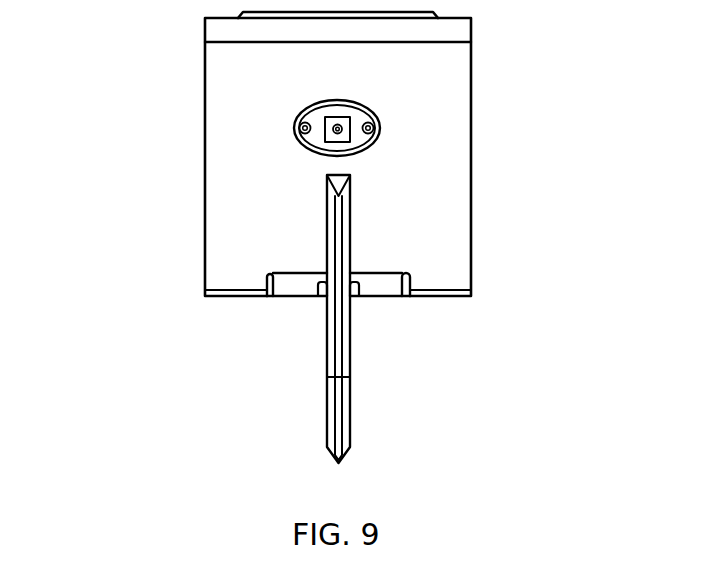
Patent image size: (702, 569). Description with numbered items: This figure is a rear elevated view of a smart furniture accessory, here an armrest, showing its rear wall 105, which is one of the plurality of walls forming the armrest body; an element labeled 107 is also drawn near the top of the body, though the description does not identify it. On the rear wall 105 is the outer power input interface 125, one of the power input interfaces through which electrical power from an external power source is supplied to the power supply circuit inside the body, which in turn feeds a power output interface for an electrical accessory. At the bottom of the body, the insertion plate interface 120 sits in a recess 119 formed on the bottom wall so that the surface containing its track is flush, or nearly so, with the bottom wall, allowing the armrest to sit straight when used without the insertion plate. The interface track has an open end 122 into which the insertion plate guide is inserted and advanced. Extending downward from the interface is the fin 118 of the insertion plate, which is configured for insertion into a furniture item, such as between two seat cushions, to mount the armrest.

The rear wall 105 is at (238, 82).
The top cover 107 is at (458, 30).
The outer power input interface 125 is at (380, 116).
The fin 118 is at (340, 312).
The recess 119 is at (392, 272).
The insertion plate interface 120 is at (287, 285).
The open end 122 is at (318, 294).